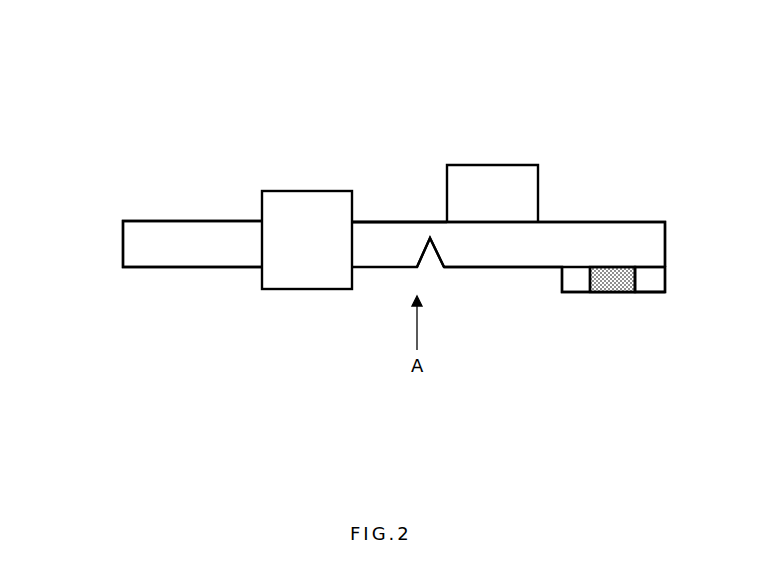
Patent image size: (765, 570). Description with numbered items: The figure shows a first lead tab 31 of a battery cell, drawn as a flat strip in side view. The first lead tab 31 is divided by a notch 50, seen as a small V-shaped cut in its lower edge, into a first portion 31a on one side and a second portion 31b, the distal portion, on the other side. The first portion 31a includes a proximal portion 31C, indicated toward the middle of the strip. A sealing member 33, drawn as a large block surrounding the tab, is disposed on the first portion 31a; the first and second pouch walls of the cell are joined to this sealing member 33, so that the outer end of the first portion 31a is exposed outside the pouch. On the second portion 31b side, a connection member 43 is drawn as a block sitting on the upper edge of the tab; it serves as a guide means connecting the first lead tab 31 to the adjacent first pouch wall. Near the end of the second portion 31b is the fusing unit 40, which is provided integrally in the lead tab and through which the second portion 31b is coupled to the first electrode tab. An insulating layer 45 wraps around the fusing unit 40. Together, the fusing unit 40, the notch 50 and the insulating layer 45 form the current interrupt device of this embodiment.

The first lead tab 31 is at (103, 242).
The first portion 31a is at (190, 260).
The second portion 31b is at (521, 262).
The proximal portion 31C is at (384, 240).
The sealing member 33 is at (305, 275).
The fusing unit 40 is at (614, 280).
The connection member 43 is at (493, 180).
The insulating layer 45 is at (657, 279).
The notch 50 is at (430, 262).